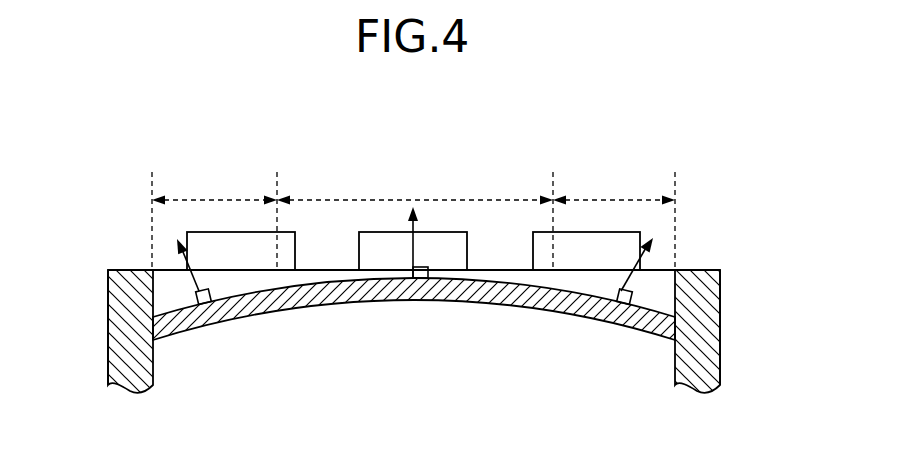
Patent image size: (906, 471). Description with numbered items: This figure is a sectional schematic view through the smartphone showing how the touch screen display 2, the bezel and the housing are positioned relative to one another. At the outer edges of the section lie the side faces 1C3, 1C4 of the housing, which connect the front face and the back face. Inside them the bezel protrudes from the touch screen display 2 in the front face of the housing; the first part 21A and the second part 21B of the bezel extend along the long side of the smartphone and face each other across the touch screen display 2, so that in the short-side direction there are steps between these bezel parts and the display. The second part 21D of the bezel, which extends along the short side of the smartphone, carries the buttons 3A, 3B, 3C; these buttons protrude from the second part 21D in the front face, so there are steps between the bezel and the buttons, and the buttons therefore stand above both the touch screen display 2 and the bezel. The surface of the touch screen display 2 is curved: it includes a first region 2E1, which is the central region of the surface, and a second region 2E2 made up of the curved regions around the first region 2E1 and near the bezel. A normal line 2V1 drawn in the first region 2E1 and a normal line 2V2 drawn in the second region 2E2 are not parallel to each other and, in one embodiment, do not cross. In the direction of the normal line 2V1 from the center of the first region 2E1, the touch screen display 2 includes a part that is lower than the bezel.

The touch screen display 2 is at (508, 298).
The normal line 2V1 is at (413, 250).
The normal line 2V2 is at (195, 285).
The first region 2E1 is at (325, 197).
The second region 2E2 is at (188, 197).
The button 3A is at (625, 243).
The button 3B is at (385, 243).
The button 3C is at (242, 243).
The first part 21A is at (703, 270).
The second part 21B is at (125, 270).
The second part 21D is at (510, 275).
The side face 1C3 is at (720, 336).
The side face 1C4 is at (108, 336).